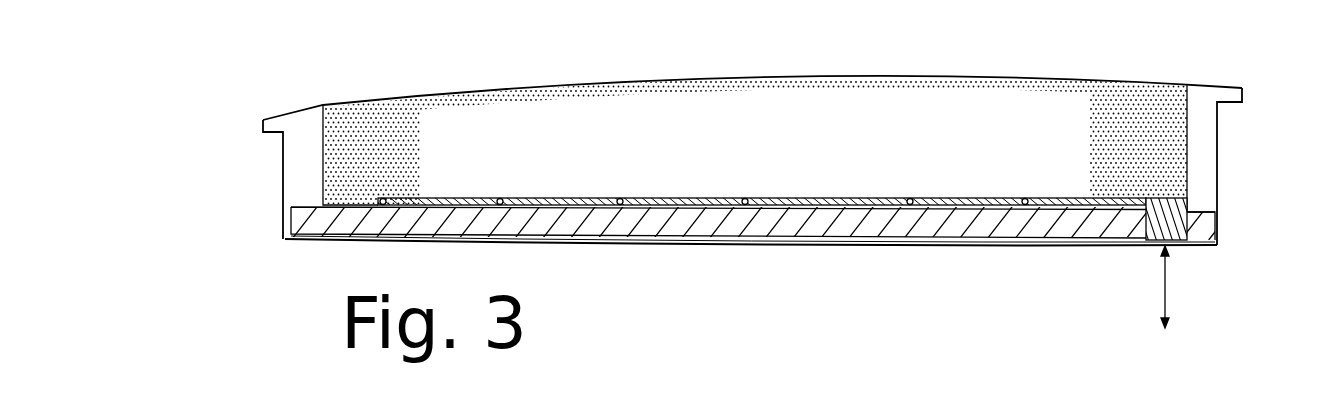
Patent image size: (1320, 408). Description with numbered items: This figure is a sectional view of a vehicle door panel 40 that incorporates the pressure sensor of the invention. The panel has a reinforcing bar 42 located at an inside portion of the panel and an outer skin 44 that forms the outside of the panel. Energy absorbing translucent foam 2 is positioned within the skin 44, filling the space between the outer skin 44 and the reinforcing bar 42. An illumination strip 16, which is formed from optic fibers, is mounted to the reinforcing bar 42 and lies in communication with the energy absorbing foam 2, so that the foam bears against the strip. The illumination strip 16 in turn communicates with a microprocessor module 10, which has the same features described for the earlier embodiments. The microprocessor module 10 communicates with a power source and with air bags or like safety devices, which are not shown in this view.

The vehicle door panel 40 is at (737, 62).
The outer skin 44 is at (540, 85).
The energy absorbing translucent foam 2 is at (855, 108).
The illumination strip 16 is at (877, 210).
The reinforcing bar 42 is at (650, 222).
The microprocessor module 10 is at (1163, 227).